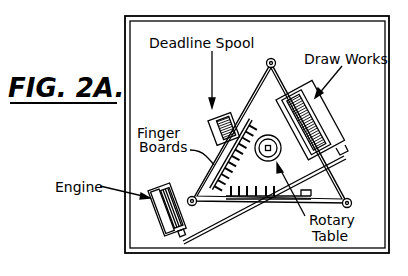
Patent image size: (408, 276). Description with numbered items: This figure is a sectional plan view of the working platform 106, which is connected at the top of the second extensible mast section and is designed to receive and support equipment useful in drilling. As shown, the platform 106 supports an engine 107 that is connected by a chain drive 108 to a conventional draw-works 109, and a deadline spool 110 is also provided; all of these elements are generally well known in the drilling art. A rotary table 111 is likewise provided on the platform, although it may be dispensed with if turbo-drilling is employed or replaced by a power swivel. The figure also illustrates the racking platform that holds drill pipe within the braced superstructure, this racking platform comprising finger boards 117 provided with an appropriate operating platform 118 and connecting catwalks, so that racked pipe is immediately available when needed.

The working platform 106 is at (176, 86).
The engine 107 is at (171, 184).
The chain drive 108 is at (247, 207).
The draw-works 109 is at (329, 132).
The deadline spool 110 is at (207, 120).
The rotary table 111 is at (264, 159).
The finger boards 117 is at (247, 102).
The operating platform 118 is at (213, 198).